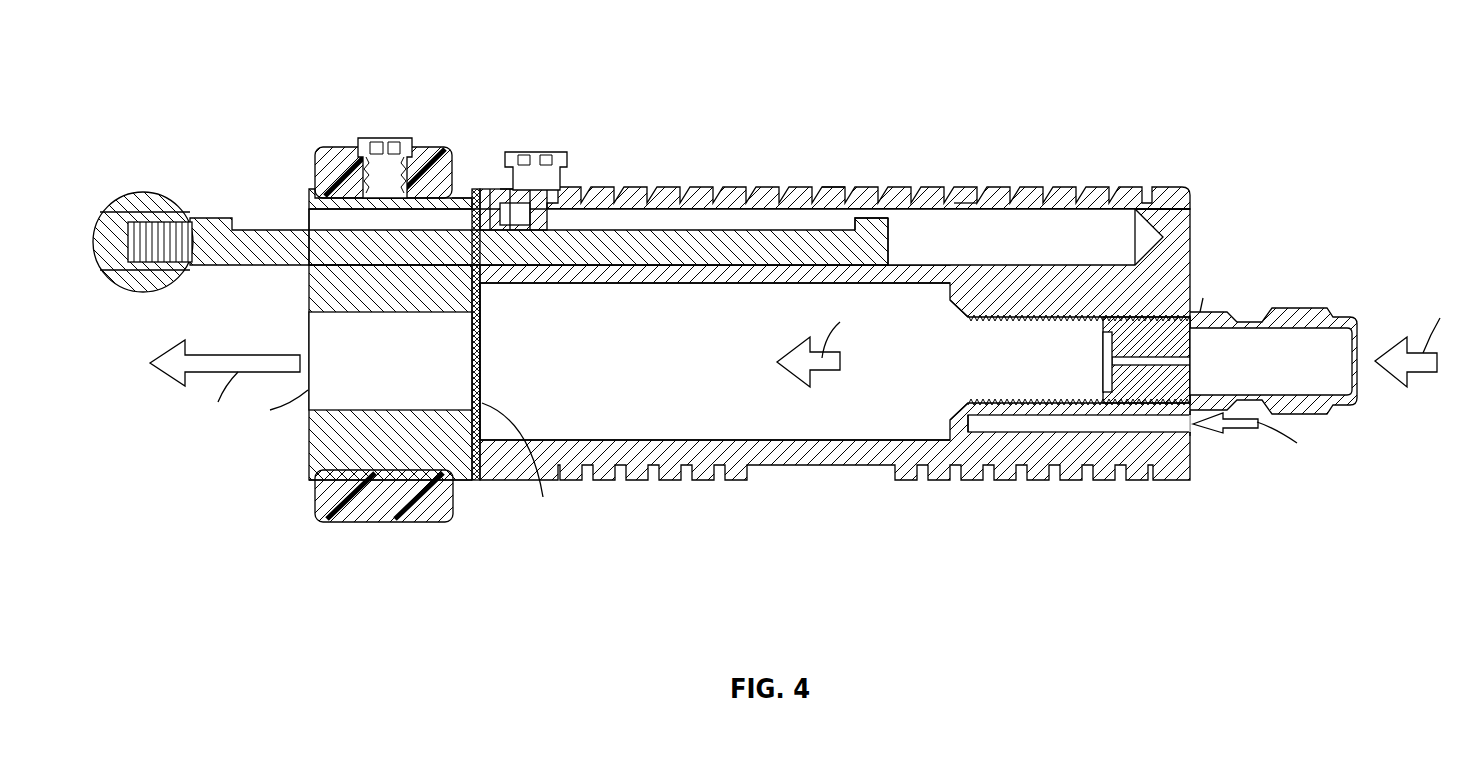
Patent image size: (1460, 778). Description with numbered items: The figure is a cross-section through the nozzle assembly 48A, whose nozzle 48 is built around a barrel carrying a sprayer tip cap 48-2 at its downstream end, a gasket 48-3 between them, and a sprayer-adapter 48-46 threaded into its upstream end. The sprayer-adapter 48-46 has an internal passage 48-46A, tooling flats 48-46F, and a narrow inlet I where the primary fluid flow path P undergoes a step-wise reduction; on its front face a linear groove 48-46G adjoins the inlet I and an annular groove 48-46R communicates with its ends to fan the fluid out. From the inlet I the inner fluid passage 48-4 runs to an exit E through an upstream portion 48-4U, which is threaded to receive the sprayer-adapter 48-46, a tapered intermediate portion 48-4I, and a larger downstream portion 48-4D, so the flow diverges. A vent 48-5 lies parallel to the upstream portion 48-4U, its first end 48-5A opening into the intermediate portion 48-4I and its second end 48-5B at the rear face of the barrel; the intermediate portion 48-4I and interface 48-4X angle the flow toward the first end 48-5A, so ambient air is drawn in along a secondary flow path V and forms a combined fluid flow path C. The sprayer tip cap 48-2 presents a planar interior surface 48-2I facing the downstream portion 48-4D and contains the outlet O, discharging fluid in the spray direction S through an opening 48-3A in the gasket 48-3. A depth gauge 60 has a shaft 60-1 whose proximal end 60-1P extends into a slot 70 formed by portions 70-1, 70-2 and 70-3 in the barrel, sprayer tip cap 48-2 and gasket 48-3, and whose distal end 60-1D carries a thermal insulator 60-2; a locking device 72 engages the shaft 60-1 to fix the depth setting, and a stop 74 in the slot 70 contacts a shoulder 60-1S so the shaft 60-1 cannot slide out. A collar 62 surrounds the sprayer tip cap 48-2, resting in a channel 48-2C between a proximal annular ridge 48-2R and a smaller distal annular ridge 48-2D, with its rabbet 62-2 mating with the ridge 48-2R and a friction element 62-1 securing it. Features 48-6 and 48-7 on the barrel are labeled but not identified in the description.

The nozzle 48 is at (754, 307).
The nozzle assembly 48A is at (397, 307).
The sprayer tip cap 48-2 is at (402, 305).
The channel 48-2C is at (343, 473).
The distal annular ridge 48-2D is at (313, 198).
The interior surface 48-2I is at (483, 302).
The proximal annular ridge 48-2R is at (465, 187).
The gasket 48-3 is at (530, 368).
The opening 48-3A is at (482, 393).
The inner fluid passage 48-4 is at (751, 334).
The downstream portion 48-4D is at (572, 432).
The intermediate portion 48-4I is at (950, 413).
The upstream portion 48-4U is at (987, 383).
The interface 48-4X is at (957, 352).
The vent 48-5 is at (1115, 490).
The first end 48-5A is at (962, 434).
The second end 48-5B is at (1195, 432).
The outer serration tooth 48-6 is at (825, 184).
The outer serration groove 48-7 is at (968, 200).
The sprayer-adapter 48-46 is at (1215, 269).
The internal passage 48-46A is at (1340, 343).
The tooling flats 48-46F is at (1222, 308).
The groove 48-46G is at (1052, 332).
The annular groove 48-46R is at (1103, 330).
The depth gauge 60 is at (514, 226).
The shaft 60-1 is at (268, 248).
The distal end 60-1D is at (147, 190).
The proximal end 60-1P is at (888, 228).
The shoulder 60-1S is at (855, 218).
The thermal insulator 60-2 is at (127, 280).
The collar 62 is at (417, 522).
The friction element 62-1 is at (382, 130).
The rabbet 62-2 is at (450, 180).
The slot 70 is at (868, 157).
The slot portion in barrel 70-1 is at (772, 200).
The slot portion in sprayer tip cap 70-2 is at (327, 225).
The slot portion in gasket 70-3 is at (505, 150).
The locking device 72 is at (553, 153).
The stop 74 is at (506, 187).
The outlet O is at (229, 383).
The spray direction S is at (218, 402).
The combined fluid flow path C is at (821, 335).
The primary fluid flow path P is at (1413, 335).
The secondary flow path V is at (1257, 436).
The exit E is at (518, 467).
The inlet I is at (1204, 289).